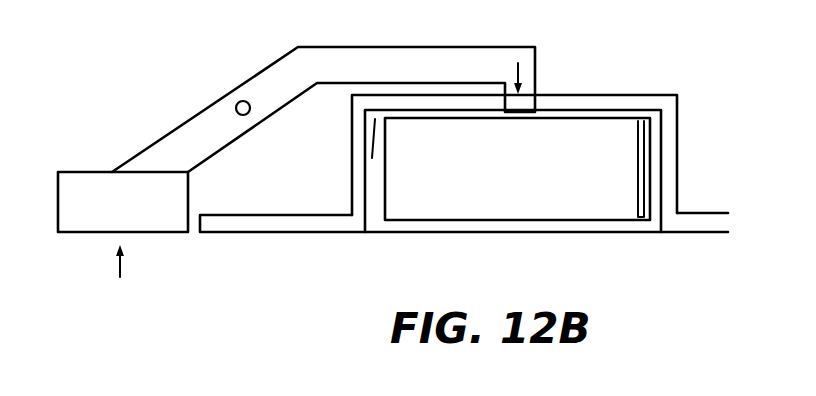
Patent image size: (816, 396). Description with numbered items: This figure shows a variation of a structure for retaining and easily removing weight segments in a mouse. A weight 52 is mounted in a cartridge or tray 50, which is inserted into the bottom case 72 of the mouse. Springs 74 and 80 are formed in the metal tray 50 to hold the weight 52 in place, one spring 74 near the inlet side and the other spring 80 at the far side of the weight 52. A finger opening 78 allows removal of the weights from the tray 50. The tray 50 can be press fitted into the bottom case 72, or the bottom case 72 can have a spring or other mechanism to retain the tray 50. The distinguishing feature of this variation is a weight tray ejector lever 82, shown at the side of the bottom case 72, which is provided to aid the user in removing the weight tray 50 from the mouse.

The cartridge or tray 50 is at (452, 228).
The weight 52 is at (535, 205).
The bottom case 72 is at (326, 227).
The spring 74 is at (357, 142).
The finger opening 78 is at (372, 197).
The spring 80 is at (633, 167).
The weight tray ejector lever 82 is at (148, 160).